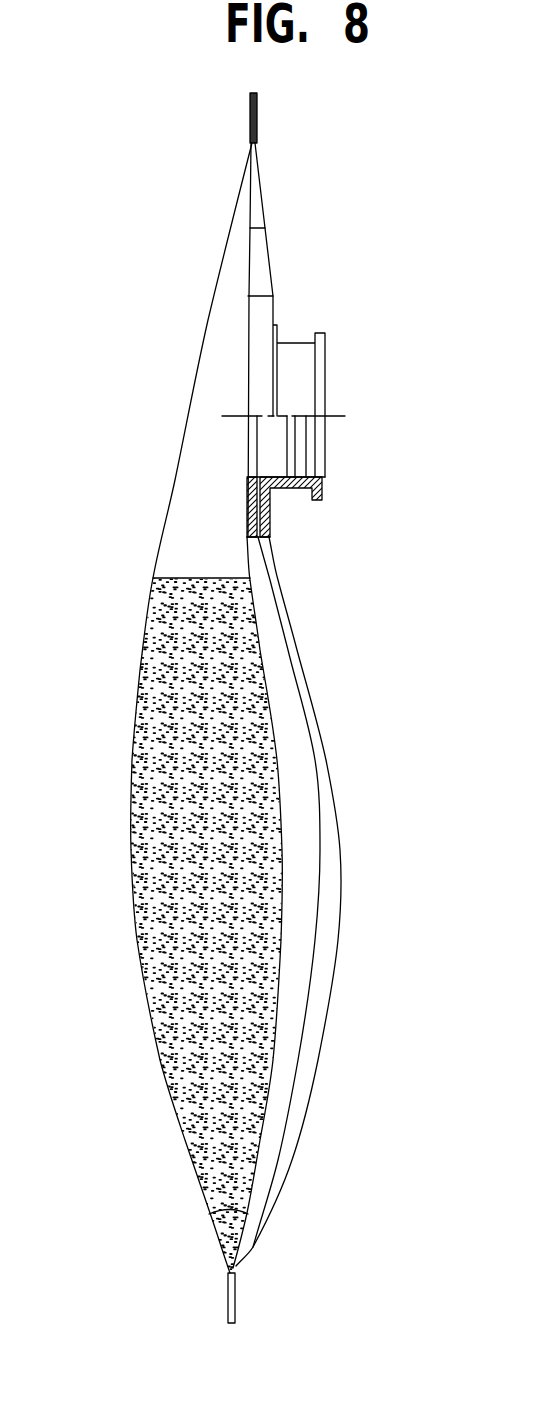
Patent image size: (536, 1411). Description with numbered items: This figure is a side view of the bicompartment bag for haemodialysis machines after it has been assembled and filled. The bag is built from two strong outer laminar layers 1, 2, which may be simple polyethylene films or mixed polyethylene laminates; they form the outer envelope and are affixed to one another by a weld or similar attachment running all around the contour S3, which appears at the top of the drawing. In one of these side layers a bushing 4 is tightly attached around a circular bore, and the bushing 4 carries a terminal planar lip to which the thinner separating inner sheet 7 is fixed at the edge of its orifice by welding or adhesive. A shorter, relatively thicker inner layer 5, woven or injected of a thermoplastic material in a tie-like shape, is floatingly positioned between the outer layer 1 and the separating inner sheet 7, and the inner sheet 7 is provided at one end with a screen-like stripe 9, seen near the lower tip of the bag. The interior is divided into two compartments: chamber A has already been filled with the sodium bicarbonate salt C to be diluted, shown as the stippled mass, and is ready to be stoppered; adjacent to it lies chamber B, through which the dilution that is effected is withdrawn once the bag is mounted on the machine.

The contour weld S3 is at (252, 112).
The outer laminar layer 1 is at (260, 177).
The separating inner sheet 7 is at (255, 228).
The outer laminar layer 2 is at (216, 297).
The bushing 4 is at (300, 375).
The chamber A is at (192, 510).
The sodium bicarbonate salt C is at (233, 645).
The chamber B is at (292, 752).
The inner layer 5 is at (320, 847).
The screen-like stripe 9 is at (212, 1215).